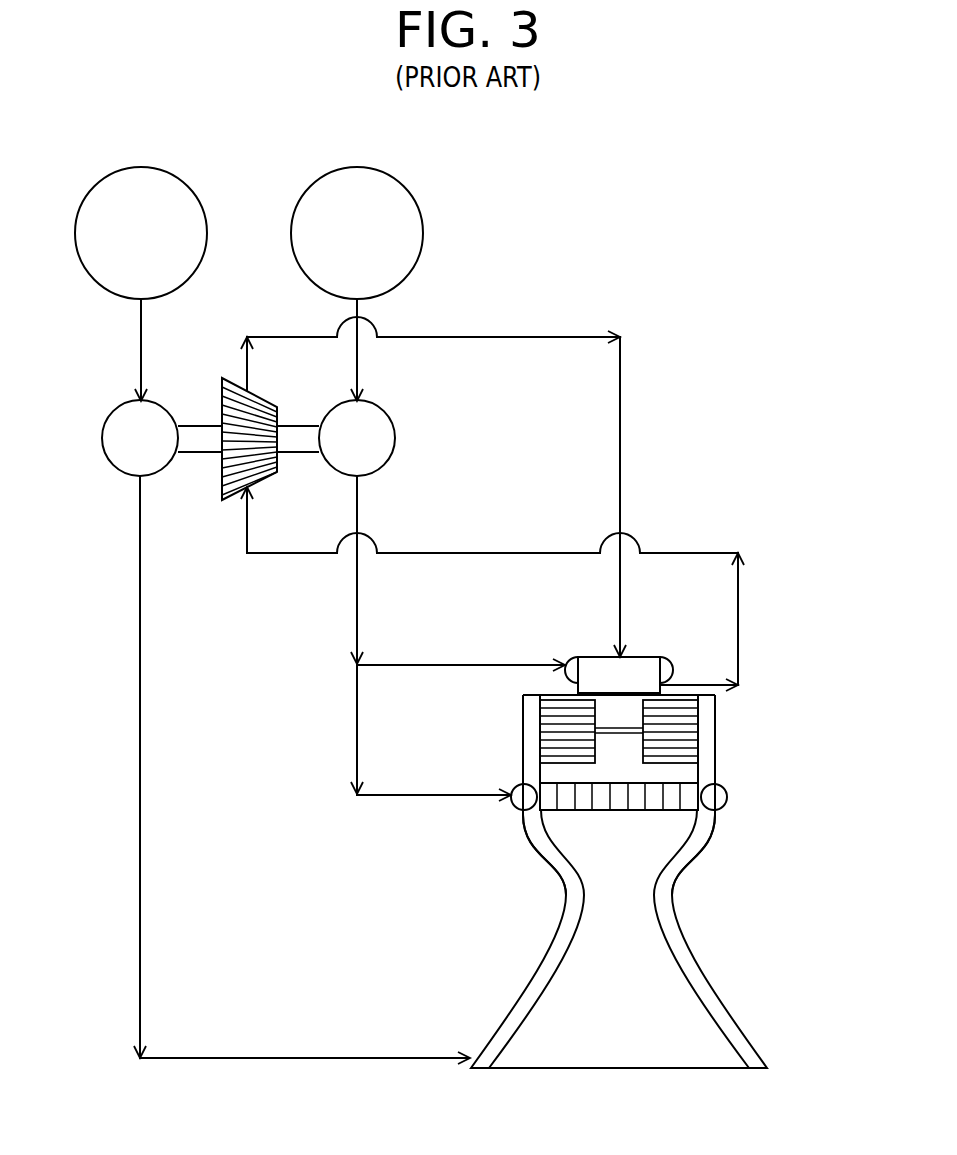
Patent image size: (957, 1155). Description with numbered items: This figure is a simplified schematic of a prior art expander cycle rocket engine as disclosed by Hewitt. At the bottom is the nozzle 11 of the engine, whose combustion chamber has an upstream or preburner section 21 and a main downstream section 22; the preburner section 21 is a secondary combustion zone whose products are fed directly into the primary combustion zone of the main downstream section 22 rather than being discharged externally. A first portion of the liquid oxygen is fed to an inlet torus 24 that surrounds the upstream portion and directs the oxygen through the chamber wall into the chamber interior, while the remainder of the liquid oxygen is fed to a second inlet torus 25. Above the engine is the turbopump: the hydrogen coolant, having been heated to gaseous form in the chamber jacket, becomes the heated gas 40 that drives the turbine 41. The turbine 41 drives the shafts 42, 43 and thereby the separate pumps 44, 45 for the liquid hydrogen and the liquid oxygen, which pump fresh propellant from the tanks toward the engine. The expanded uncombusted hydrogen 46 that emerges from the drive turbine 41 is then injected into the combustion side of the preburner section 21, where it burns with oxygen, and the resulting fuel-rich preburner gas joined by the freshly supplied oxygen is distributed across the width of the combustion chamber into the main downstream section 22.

The nozzle 11 is at (852, 695).
The upstream or preburner section 21 is at (765, 695).
The main downstream section 22 is at (765, 800).
The inlet torus 24 is at (665, 655).
The inlet torus 25 is at (516, 790).
The heated gas 40 is at (287, 555).
The drive turbine 41 is at (238, 378).
The shaft 42 is at (198, 425).
The liquid oxygen pump 43 is at (295, 424).
The pump 44 is at (112, 412).
The pump 45 is at (396, 430).
The expanded uncombusted hydrogen 46 is at (290, 335).